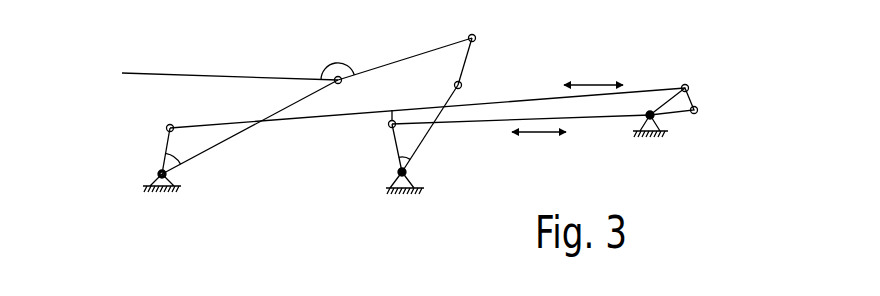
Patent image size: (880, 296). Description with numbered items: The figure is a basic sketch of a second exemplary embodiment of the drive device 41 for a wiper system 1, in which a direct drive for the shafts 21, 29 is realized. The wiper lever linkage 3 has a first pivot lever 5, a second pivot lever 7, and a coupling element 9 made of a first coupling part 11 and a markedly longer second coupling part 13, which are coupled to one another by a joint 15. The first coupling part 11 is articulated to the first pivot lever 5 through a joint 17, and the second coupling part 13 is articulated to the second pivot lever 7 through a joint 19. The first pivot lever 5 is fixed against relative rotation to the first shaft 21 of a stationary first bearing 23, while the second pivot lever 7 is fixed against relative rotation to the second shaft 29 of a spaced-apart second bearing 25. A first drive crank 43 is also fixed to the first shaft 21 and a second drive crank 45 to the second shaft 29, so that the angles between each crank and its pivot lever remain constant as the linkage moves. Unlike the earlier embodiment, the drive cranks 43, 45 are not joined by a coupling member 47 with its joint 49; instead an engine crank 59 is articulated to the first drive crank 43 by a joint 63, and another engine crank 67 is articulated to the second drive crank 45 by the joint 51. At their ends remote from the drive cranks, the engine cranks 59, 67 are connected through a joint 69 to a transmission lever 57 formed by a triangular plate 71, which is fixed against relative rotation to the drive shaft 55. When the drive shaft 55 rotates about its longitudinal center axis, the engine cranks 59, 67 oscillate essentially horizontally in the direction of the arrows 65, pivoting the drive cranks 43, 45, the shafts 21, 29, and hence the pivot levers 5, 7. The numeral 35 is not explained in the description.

The wiper system 1 is at (282, 56).
The wiper lever linkage 3 is at (434, 46).
The first pivot lever 5 is at (421, 143).
The second pivot lever 7 is at (208, 151).
The coupling element 9 is at (397, 58).
The first coupling part 11 is at (470, 60).
The second coupling part 13 is at (363, 71).
The joint 15 is at (481, 31).
The joint 17 is at (466, 86).
The joint 19 is at (334, 62).
The first shaft 21 is at (350, 197).
The first bearing 23 is at (403, 196).
The second bearing 25 is at (142, 194).
The second shaft 29 is at (158, 173).
The actuating rod 35 is at (148, 73).
The drive device 41 is at (683, 74).
The first drive crank 43 is at (396, 148).
The second drive crank 45 is at (167, 142).
The coupling member 47 is at (274, 117).
The joint 49 is at (313, 163).
The joint 51 is at (166, 122).
The drive shaft 55 is at (650, 109).
The transmission lever 57 is at (696, 122).
The engine crank 59 is at (597, 117).
The joint 63 is at (393, 108).
The arrows 65 is at (592, 81).
The engine crank 67 is at (547, 99).
The joint 69 is at (707, 107).
The triangular plate 71 is at (680, 112).